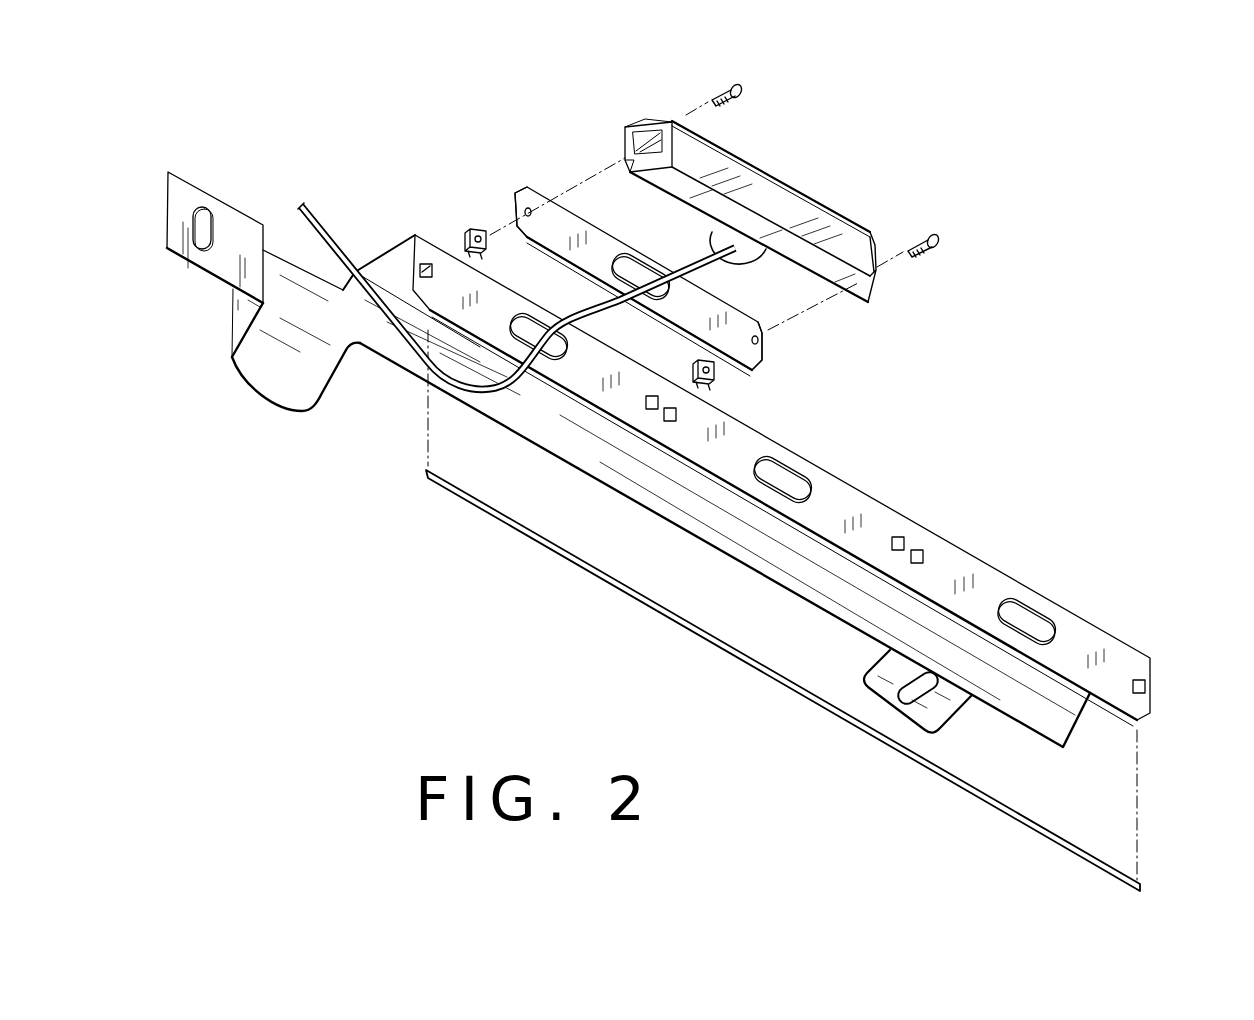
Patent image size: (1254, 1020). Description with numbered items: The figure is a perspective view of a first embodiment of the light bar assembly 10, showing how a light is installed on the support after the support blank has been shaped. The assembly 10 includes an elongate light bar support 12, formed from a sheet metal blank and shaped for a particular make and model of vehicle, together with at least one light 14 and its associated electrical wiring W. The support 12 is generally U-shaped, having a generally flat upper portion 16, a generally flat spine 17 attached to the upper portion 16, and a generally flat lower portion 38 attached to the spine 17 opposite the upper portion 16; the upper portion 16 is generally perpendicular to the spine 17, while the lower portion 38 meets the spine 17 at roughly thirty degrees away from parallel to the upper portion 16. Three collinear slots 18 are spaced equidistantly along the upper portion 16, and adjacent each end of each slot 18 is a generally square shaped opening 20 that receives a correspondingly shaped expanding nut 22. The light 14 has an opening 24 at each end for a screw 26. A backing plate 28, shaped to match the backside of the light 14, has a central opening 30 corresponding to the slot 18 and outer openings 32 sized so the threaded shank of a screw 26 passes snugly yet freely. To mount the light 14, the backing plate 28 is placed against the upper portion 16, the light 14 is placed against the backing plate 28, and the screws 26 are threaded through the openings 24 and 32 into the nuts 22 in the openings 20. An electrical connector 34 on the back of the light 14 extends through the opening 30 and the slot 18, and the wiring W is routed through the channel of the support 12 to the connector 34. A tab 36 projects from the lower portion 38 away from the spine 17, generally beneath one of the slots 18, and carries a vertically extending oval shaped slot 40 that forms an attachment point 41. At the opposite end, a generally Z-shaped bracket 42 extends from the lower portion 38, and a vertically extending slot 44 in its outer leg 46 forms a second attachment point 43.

The light bar assembly 10 is at (966, 418).
The light bar support 12 is at (1141, 600).
The light 14 is at (707, 203).
The upper portion 16 is at (956, 575).
The spine 17 is at (395, 261).
The slots 18 is at (536, 360).
The square shaped opening 20 is at (424, 263).
The expanding nut 22 is at (490, 252).
The opening 24 is at (628, 131).
The screw 26 is at (716, 93).
The backing plate 28 is at (676, 258).
The central opening 30 is at (541, 296).
The outer openings 32 is at (518, 207).
The electrical connector 34 is at (722, 233).
The tab 36 is at (892, 708).
The lower portion 38 is at (1068, 749).
The oval shaped slot 40 is at (906, 686).
The attachment point 41 is at (890, 705).
The bracket 42 is at (234, 277).
The second attachment point 43 is at (185, 217).
The slot 44 is at (196, 224).
The outer leg 46 is at (204, 276).
The electrical wiring W is at (736, 262).